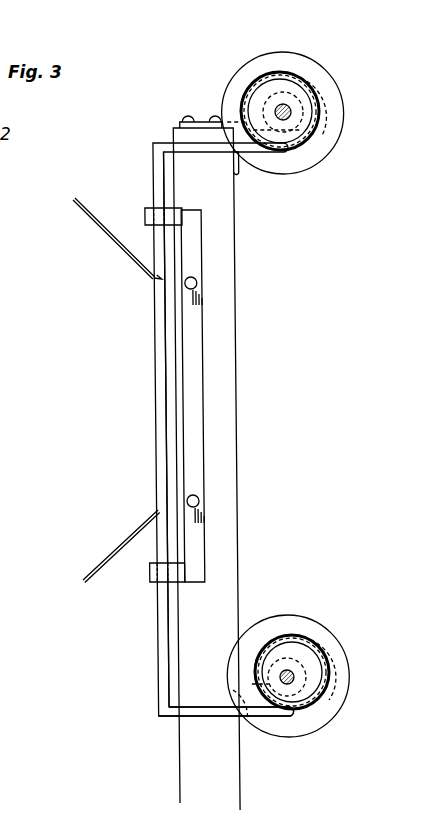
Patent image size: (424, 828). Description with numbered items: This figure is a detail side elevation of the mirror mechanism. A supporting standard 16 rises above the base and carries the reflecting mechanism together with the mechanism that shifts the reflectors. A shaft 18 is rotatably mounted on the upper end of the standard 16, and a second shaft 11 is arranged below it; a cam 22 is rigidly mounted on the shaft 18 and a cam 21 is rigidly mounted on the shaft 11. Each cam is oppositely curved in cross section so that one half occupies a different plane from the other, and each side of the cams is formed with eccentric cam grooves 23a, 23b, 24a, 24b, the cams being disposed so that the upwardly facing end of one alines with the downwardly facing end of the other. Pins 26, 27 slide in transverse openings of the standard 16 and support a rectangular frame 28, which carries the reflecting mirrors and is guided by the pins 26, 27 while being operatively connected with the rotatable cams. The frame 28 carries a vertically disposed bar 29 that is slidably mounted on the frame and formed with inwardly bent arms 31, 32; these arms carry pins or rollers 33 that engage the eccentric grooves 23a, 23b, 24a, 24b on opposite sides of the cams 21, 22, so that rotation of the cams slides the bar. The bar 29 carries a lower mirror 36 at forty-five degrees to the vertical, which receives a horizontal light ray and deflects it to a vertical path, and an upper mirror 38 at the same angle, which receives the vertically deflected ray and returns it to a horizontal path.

The shaft 11 is at (290, 670).
The standard 16 is at (226, 407).
The shaft 18 is at (288, 107).
The cam 21 is at (297, 627).
The cam 22 is at (302, 162).
The eccentric cam groove 23a is at (282, 637).
The eccentric cam groove 23b is at (303, 703).
The eccentric cam groove 24a is at (266, 83).
The eccentric cam groove 24b is at (313, 133).
The pin 26 is at (197, 283).
The pin 27 is at (192, 502).
The frame 28 is at (189, 412).
The bar 29 is at (160, 348).
The arm 31 is at (196, 713).
The arm 32 is at (209, 145).
The pin or roller 33 is at (282, 157).
The lower mirror 36 is at (130, 522).
The upper mirror 38 is at (90, 215).